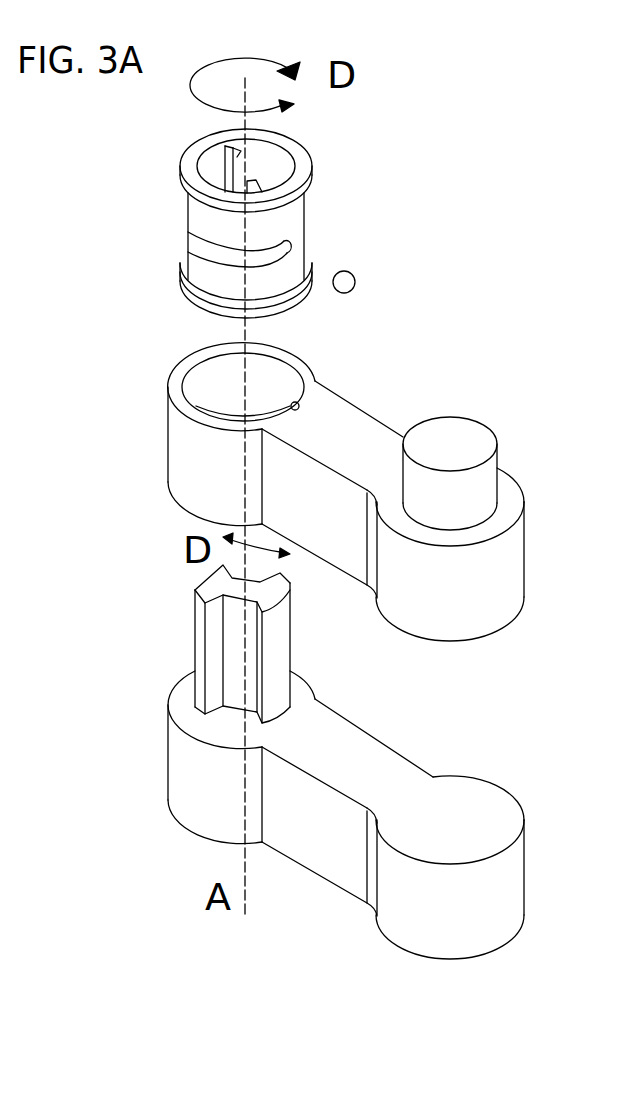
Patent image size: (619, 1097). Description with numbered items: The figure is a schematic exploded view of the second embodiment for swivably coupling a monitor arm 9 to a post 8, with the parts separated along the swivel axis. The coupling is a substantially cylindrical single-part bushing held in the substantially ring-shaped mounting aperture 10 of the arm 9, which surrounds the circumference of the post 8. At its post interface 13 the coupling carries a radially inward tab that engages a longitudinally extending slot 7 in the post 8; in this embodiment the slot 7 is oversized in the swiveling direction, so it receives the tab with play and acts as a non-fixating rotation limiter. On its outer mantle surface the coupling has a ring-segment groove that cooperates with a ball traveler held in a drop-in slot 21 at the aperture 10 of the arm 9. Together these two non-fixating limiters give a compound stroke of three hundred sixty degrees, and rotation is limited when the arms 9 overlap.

The longitudinally extending slot 7 is at (230, 648).
The coupling post 8 is at (473, 497).
The monitor arm 9 is at (303, 493).
The mounting aperture of monitor arm 10 is at (219, 381).
The post interface of coupling 13 is at (213, 163).
The slot of traveler 21 is at (298, 403).